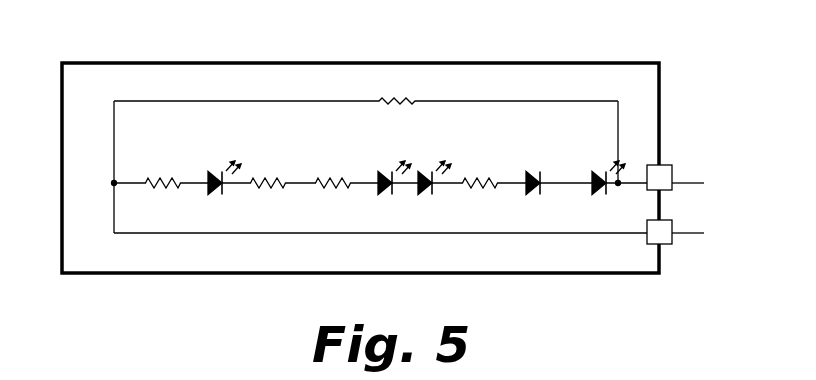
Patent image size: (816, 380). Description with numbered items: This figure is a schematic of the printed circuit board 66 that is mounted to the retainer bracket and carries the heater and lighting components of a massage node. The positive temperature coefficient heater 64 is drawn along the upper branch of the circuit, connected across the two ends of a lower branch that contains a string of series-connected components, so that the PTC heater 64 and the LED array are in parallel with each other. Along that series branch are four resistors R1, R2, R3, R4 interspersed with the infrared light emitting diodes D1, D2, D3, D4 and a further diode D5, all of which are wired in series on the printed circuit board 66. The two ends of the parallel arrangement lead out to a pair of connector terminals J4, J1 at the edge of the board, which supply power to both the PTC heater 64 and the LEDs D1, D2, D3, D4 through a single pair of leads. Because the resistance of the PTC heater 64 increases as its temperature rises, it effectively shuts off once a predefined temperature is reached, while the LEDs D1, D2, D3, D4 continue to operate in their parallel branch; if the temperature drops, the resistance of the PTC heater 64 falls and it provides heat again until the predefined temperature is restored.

The positive temperature coefficient (PTC) heater 64 is at (366, 92).
The printed circuit board 66 is at (360, 168).
The resistor R1 is at (163, 171).
The resistor R2 is at (268, 171).
The resistor R3 is at (333, 171).
The resistor R4 is at (480, 171).
The infrared light emitting diode D1 is at (223, 163).
The infrared light emitting diode D2 is at (393, 163).
The infrared light emitting diode D3 is at (433, 163).
The infrared light emitting diode D4 is at (606, 163).
The diode D5 is at (531, 163).
The connector J4 is at (675, 178).
The connector J1 is at (676, 231).